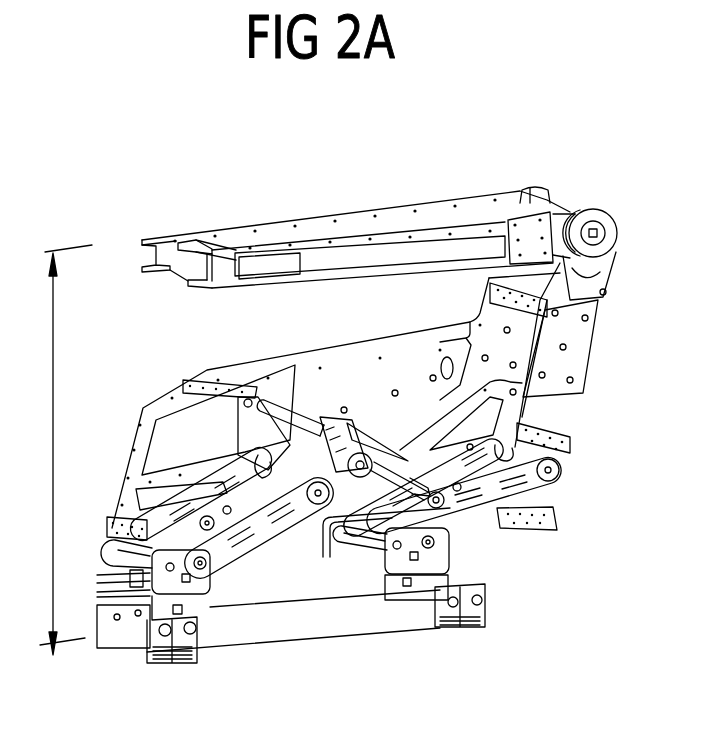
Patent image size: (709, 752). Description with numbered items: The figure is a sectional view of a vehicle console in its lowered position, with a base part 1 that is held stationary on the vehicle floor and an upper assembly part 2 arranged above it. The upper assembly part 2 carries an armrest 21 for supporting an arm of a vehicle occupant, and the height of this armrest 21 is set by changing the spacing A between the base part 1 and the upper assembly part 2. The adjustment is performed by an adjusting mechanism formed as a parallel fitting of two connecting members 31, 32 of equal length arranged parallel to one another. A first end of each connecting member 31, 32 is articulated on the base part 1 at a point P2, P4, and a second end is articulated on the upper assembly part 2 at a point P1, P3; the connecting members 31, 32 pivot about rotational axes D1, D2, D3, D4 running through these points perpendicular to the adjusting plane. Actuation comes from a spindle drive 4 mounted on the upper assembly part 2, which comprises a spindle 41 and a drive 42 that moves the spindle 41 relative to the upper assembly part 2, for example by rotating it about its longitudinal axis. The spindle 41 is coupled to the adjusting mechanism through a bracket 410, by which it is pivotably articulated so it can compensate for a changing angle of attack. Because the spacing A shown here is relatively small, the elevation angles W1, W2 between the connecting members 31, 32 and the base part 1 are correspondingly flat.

The base part 1 is at (297, 620).
The upper assembly part 2 is at (595, 348).
The spindle drive 4 is at (345, 400).
The armrest 21 is at (350, 212).
The connecting member 31 is at (480, 513).
The connecting member 32 is at (253, 538).
The spindle 41 is at (270, 410).
The drive 42 is at (342, 455).
The bracket 410 is at (430, 495).
The spacing A is at (59, 450).
The rotational axis D1 is at (510, 450).
The rotational axis D2 is at (363, 538).
The rotational axis D3 is at (263, 460).
The rotational axis D4 is at (153, 550).
The articulation point P1 is at (553, 469).
The articulation point P2 is at (434, 544).
The articulation point P3 is at (318, 502).
The articulation point P4 is at (200, 568).
The elevation angle W1 is at (520, 528).
The elevation angle W2 is at (280, 517).